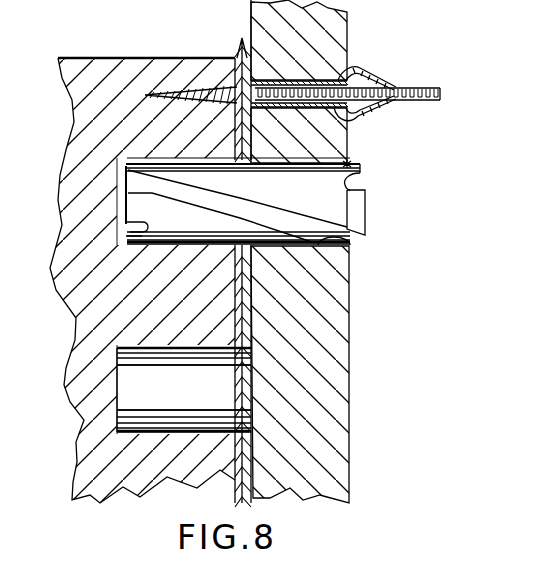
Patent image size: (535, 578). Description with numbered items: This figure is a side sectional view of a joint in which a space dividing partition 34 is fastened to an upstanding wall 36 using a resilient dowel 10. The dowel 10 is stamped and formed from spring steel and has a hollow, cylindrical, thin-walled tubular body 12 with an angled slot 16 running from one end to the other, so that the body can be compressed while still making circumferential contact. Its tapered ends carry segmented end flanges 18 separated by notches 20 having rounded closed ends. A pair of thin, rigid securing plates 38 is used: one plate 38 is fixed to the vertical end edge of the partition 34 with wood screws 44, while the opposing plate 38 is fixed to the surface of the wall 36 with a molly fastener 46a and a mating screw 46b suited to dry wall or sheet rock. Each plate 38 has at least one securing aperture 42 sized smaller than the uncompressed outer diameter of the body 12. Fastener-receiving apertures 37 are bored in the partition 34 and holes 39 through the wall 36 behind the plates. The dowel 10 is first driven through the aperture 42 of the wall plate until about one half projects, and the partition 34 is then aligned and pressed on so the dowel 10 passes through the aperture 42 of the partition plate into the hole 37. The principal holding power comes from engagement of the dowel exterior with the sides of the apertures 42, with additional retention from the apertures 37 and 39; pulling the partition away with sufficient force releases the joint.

The dowel 10 is at (352, 165).
The tubular body 12 is at (247, 191).
The angled slot 16 is at (276, 201).
The segmented end flanges 18 is at (356, 200).
The notches 20 is at (367, 178).
The partition 34 is at (128, 68).
The wall 36 is at (340, 322).
The fastener-receiving apertures 37 is at (117, 167).
The securing plates 38 is at (238, 253).
The holes 39 is at (350, 240).
The securing aperture 42 is at (257, 430).
The wood screws 44 is at (178, 88).
The molly fastener 46a is at (362, 74).
The mating screw 46b is at (424, 88).